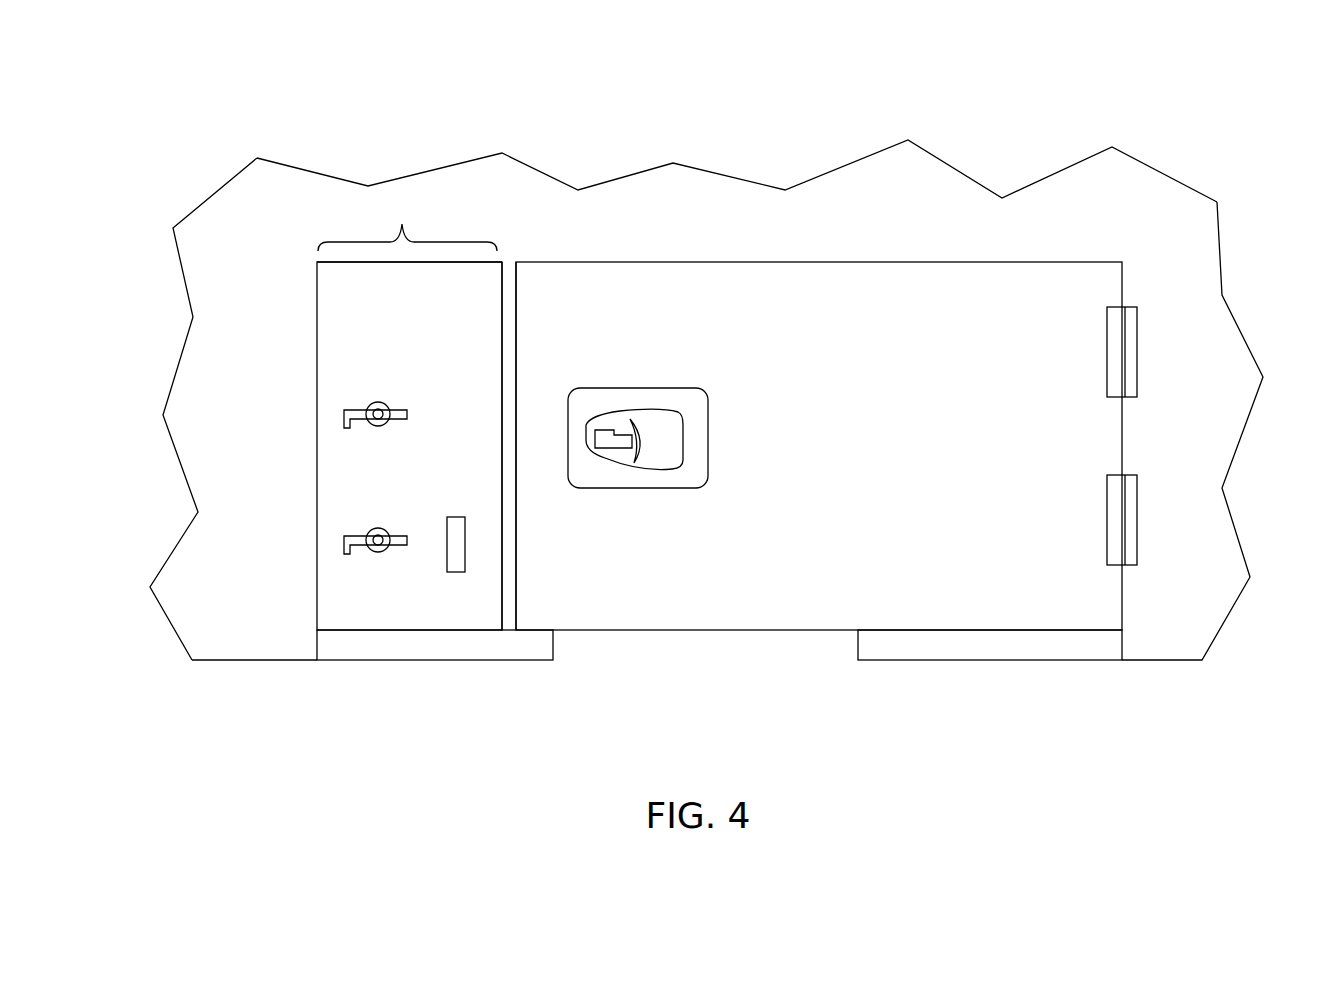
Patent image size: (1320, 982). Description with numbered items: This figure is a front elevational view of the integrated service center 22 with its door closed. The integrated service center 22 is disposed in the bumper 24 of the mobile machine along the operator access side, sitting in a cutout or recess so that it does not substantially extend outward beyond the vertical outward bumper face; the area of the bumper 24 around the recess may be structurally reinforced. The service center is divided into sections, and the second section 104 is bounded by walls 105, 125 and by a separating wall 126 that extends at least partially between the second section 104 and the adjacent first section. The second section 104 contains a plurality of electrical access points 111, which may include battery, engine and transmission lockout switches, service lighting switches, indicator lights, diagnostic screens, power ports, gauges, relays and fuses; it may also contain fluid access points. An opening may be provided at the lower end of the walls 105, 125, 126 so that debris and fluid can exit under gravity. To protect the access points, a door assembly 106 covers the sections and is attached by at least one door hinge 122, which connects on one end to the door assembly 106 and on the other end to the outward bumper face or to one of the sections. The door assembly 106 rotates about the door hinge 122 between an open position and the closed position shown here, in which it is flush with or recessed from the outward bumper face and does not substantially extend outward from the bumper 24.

The integrated service center 22 is at (1202, 163).
The bumper 24 is at (842, 165).
The second section 104 is at (409, 230).
The wall 105 is at (353, 333).
The door assembly 106 is at (758, 563).
The electrical access points 111 is at (383, 425).
The door hinge 122 is at (1137, 525).
The wall 125 is at (317, 563).
The separating wall 126 is at (508, 603).